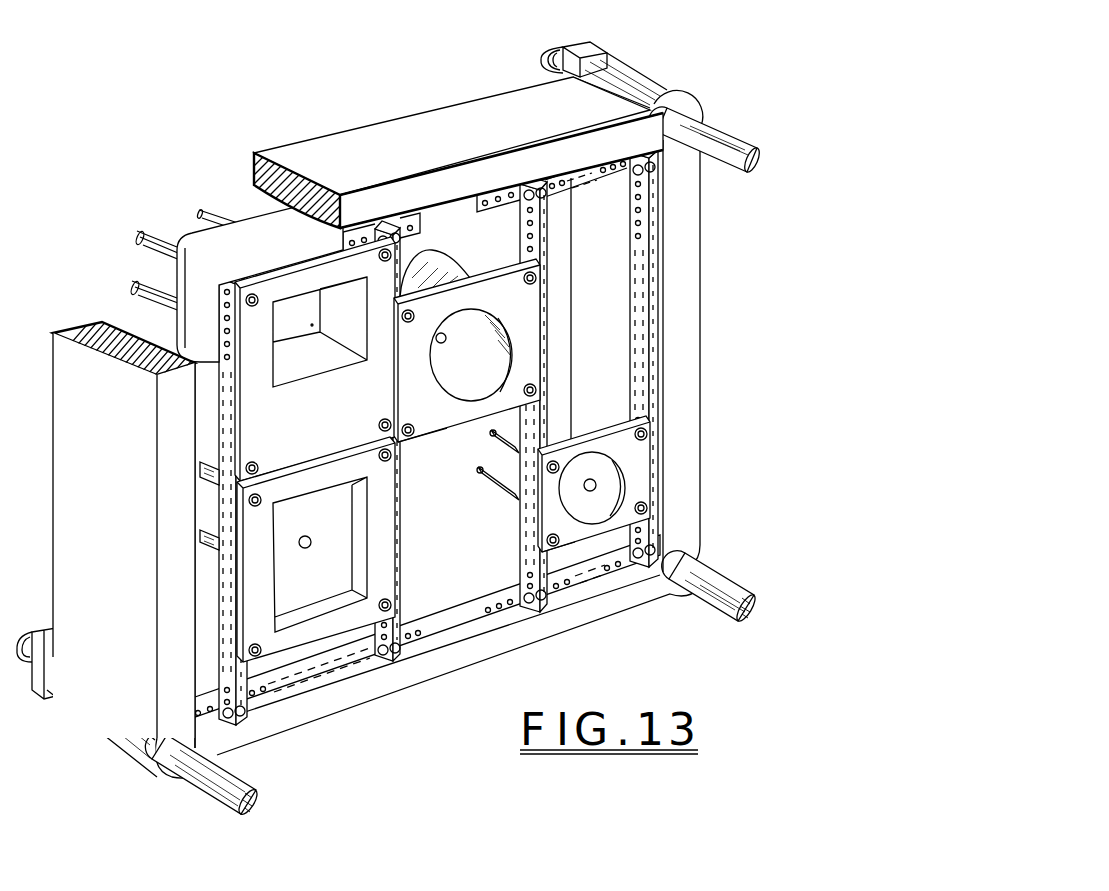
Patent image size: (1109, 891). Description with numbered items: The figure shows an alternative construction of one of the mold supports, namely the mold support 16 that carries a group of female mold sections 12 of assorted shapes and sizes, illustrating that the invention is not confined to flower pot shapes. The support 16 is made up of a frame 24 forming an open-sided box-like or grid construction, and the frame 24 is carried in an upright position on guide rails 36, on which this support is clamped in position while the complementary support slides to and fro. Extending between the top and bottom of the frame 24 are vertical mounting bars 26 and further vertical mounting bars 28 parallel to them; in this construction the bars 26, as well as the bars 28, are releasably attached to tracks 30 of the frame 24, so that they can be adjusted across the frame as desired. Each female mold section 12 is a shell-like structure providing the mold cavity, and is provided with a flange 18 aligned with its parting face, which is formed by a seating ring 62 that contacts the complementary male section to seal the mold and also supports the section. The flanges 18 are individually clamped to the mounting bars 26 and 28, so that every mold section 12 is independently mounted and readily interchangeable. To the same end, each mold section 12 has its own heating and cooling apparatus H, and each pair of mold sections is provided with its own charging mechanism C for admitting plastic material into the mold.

The female mold section 12 is at (318, 300).
The mold support 16 is at (504, 76).
The flange 18 is at (278, 282).
The frame 24 is at (110, 500).
The vertical mounting bar 26 is at (523, 512).
The vertical mounting bar 28 is at (628, 243).
The track 30 is at (584, 172).
The guide rail 36 is at (732, 134).
The seating ring 62 is at (447, 428).
The charging mechanism C is at (159, 219).
The heating and cooling apparatus H is at (209, 203).